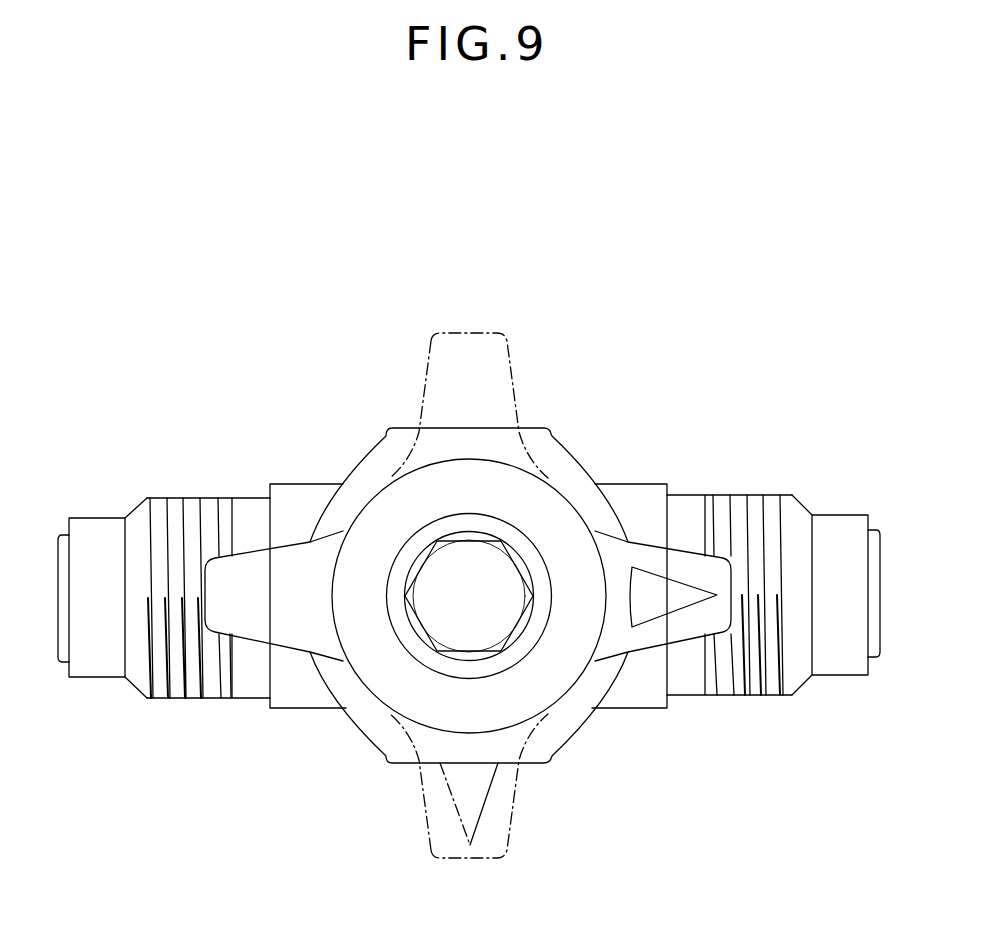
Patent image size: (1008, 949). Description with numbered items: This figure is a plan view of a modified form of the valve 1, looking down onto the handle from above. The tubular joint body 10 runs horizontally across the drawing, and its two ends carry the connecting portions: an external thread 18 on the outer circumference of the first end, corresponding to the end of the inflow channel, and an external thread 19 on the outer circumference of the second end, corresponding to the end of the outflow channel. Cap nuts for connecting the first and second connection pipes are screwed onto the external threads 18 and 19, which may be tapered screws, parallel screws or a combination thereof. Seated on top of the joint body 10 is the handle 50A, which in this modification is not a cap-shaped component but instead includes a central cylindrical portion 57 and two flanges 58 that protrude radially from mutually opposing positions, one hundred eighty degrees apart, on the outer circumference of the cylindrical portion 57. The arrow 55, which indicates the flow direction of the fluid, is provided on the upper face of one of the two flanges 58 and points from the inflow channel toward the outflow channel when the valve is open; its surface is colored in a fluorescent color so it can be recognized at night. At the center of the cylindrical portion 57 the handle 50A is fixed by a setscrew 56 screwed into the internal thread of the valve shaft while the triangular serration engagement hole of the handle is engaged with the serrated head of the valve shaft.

The valve assembly 1 is at (687, 328).
The joint body 10 is at (305, 703).
The external thread 18 is at (173, 700).
The external thread 19 is at (752, 698).
The handle 50A is at (365, 477).
The arrow 55 is at (672, 592).
The setscrew 56 is at (497, 618).
The cylindrical portion 57 is at (533, 495).
The flanges 58 is at (258, 625).